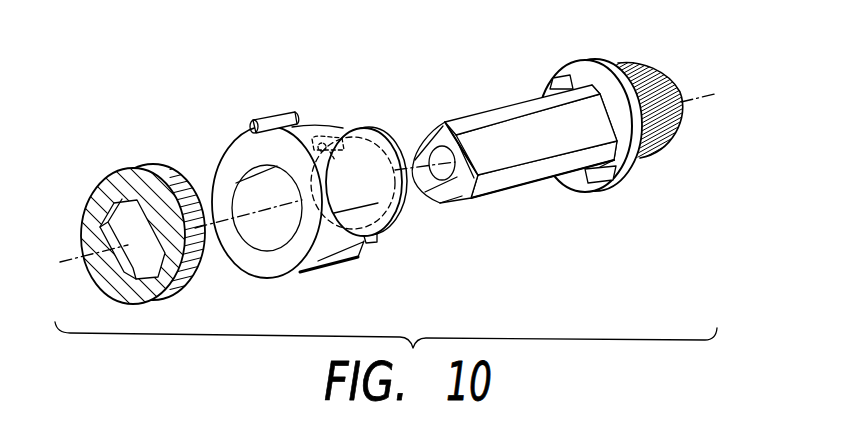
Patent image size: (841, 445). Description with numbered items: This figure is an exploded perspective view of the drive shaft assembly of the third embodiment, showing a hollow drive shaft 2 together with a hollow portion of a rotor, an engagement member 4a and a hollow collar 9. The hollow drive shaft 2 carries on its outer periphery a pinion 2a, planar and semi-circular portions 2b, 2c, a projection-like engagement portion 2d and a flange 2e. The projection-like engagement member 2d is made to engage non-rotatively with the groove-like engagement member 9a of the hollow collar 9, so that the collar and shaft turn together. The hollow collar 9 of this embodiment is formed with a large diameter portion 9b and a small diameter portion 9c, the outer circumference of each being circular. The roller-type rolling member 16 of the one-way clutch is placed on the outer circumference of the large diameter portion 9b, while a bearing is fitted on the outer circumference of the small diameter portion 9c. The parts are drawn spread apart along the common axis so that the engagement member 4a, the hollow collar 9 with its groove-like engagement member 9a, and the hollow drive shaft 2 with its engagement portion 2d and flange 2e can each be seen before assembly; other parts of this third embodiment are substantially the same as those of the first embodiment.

The hollow drive shaft 2 is at (510, 206).
The pinion 2a is at (658, 156).
The planar portion 2b is at (468, 132).
The semi-circular portion 2c is at (500, 106).
The projection-like engagement portion 2d is at (592, 178).
The flange 2e is at (623, 186).
The cap with hexagonal hole 4a is at (153, 171).
The hollow collar 9 is at (317, 110).
The groove-like engagement member 9a is at (400, 231).
The large diameter portion 9b is at (350, 262).
The small diameter portion 9c is at (364, 128).
The roller-type rolling member 16 is at (268, 112).